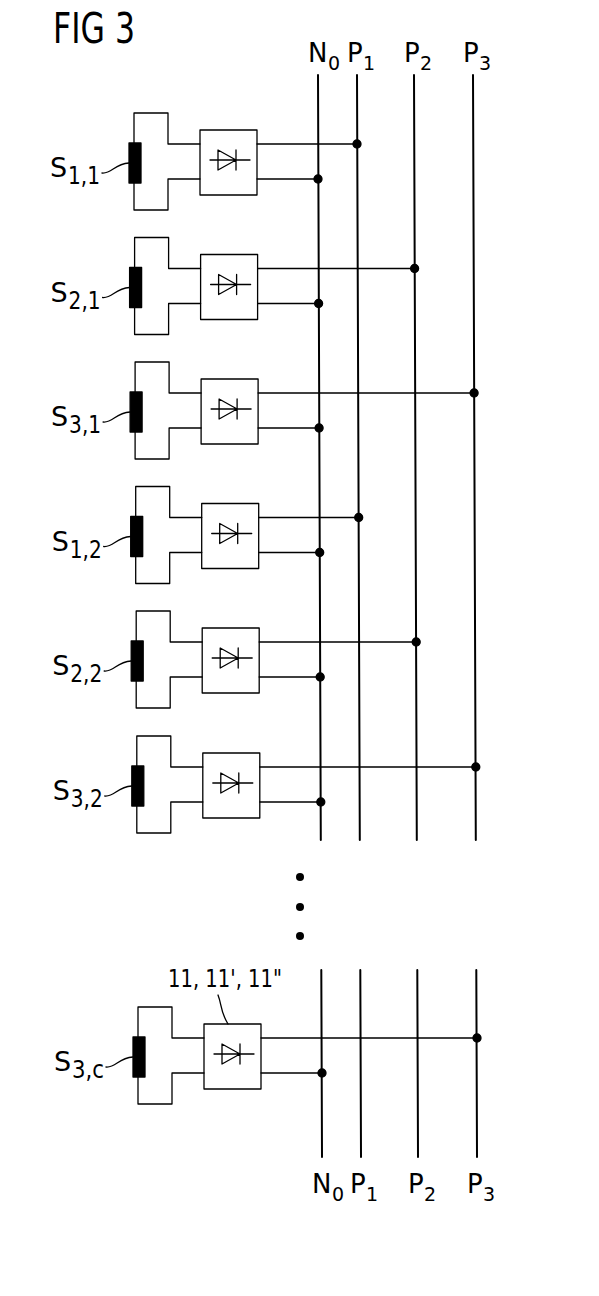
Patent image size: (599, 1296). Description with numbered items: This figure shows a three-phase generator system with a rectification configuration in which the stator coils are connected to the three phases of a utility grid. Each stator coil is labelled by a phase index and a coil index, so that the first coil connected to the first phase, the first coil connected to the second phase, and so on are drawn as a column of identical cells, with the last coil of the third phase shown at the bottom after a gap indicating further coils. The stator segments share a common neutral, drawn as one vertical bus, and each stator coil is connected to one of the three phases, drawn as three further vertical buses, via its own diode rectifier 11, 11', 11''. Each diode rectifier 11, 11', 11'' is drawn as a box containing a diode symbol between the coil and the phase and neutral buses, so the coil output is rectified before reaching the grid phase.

The diode rectifier 11 is at (225, 132).
The diode rectifier 11' is at (229, 287).
The diode rectifier 11'' is at (229, 411).